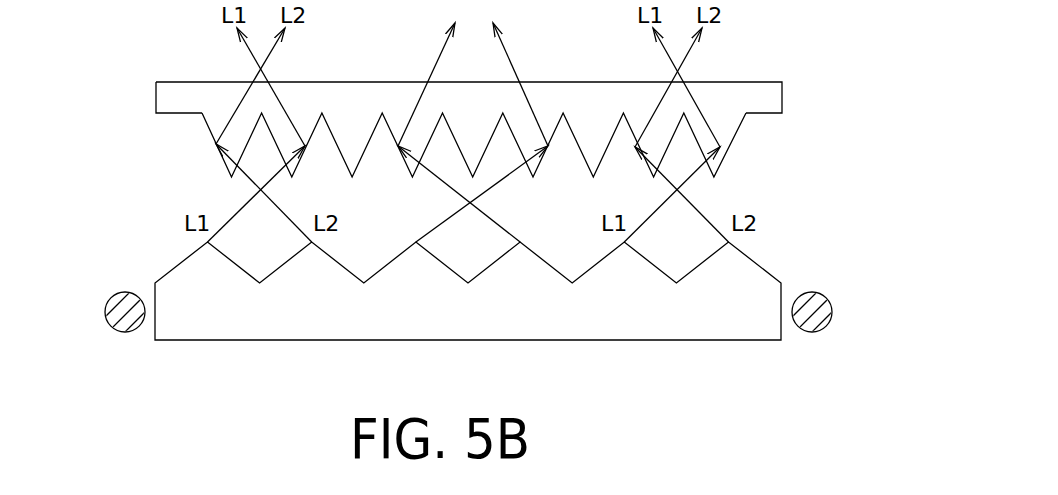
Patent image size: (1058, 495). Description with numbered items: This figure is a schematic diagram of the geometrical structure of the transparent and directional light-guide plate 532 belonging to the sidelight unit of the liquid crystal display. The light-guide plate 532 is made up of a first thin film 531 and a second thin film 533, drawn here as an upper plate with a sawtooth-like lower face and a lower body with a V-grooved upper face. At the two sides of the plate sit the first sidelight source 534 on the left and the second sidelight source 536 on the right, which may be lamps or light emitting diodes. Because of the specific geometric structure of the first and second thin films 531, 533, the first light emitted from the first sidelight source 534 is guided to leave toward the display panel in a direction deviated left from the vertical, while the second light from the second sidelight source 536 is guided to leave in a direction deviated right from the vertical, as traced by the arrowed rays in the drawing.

The first thin film 531 is at (783, 93).
The light-guide plate 532 is at (140, 115).
The second thin film 533 is at (758, 260).
The first sidelight source 534 is at (105, 312).
The second sidelight source 536 is at (832, 312).